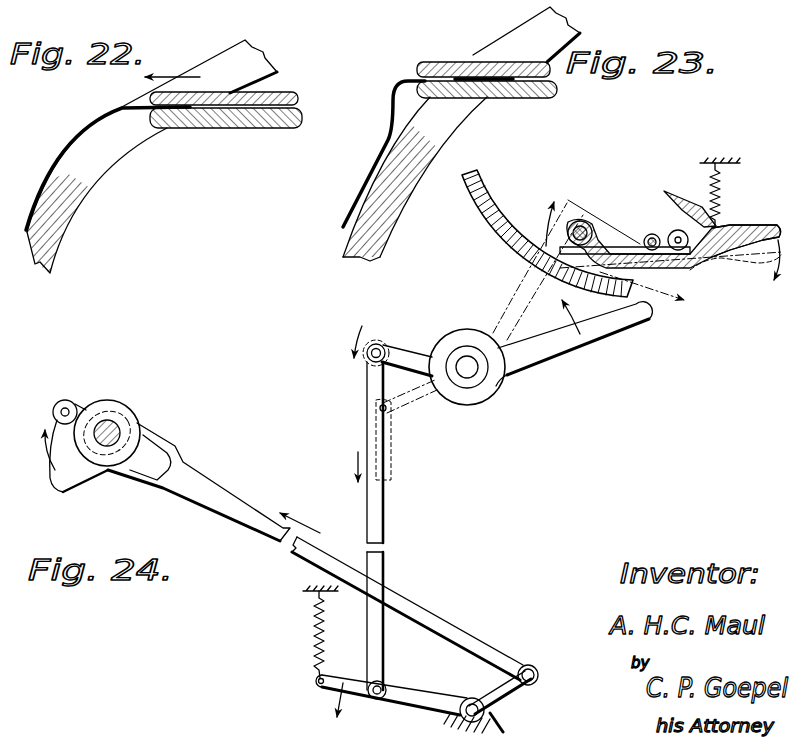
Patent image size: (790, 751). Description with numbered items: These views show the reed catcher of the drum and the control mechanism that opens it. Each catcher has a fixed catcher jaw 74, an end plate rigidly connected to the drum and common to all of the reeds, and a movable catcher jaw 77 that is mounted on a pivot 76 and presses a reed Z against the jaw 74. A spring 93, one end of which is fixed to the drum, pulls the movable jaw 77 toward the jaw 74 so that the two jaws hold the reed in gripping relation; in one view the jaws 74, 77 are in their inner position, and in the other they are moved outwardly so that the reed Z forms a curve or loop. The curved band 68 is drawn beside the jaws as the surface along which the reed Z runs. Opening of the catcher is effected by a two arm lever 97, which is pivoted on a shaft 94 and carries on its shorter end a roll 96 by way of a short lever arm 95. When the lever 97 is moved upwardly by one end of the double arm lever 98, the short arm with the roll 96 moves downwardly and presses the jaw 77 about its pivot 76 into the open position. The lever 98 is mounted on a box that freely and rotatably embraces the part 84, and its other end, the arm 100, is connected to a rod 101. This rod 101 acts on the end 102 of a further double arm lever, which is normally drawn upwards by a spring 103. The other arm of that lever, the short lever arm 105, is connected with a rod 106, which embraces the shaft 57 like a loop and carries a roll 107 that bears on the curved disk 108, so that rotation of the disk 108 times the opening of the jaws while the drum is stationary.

In FIG. 22, the reed Z is at (92, 137).
In FIG. 23, the reed Z is at (397, 83).
In FIG. 22, the curved guide band 68 is at (80, 207).
In FIG. 23, the curved guide band 68 is at (408, 170).
In FIG. 22, the movable catcher jaw 77 is at (278, 91).
In FIG. 23, the movable catcher jaw 77 is at (436, 62).
In FIG. 22, the catcher jaw 74 is at (216, 128).
In FIG. 23, the catcher jaw 74 is at (524, 98).
In FIG. 23, the pivot 76 is at (585, 222).
In FIG. 23, the two arm lever 97 is at (615, 246).
In FIG. 23, the shaft 94 is at (652, 235).
In FIG. 23, the roll 96 is at (679, 231).
In FIG. 23, the short lever arm 95 is at (668, 206).
In FIG. 23, the spring 93 is at (730, 183).
In FIG. 23, the part 84 is at (466, 371).
In FIG. 23, the double arm lever 98 is at (598, 327).
In FIG. 23, the arm 100 is at (403, 352).
In FIG. 23, the rod 101 is at (366, 432).
In FIG. 24, the shaft 57 is at (115, 428).
In FIG. 24, the roll 107 is at (68, 399).
In FIG. 24, the curved disk 108 is at (80, 477).
In FIG. 24, the rod 106 is at (440, 622).
In FIG. 24, the short lever arm 105 is at (497, 697).
In FIG. 24, the lever arm 102 is at (422, 700).
In FIG. 24, the spring 103 is at (312, 612).